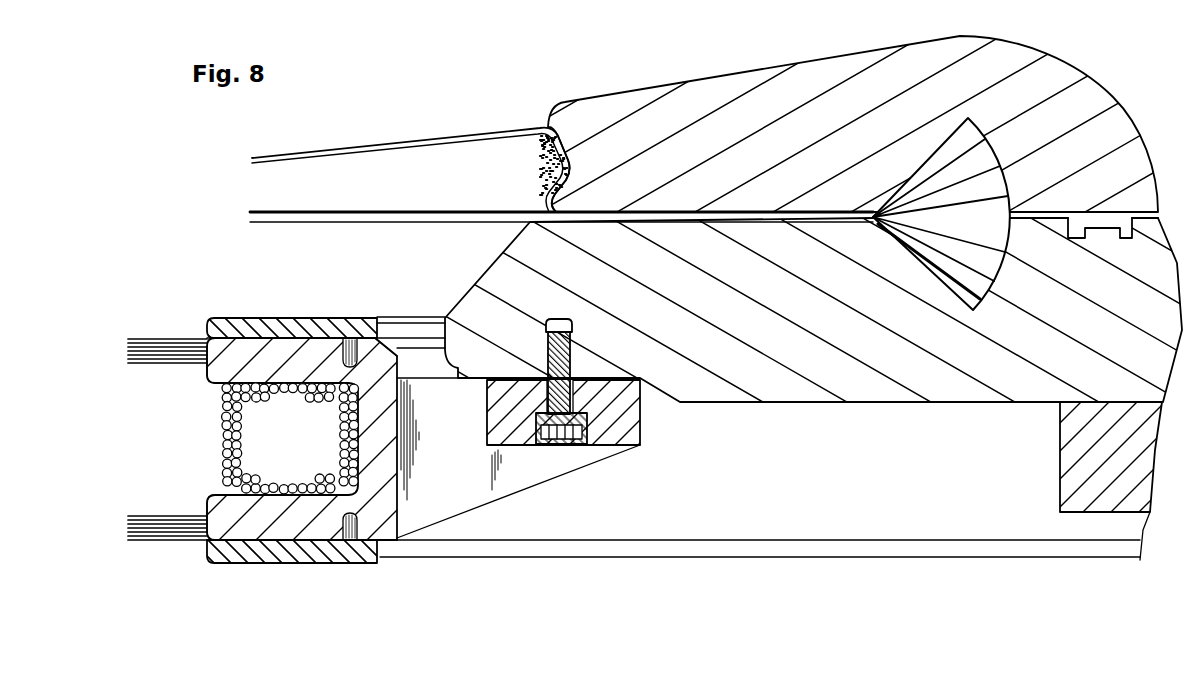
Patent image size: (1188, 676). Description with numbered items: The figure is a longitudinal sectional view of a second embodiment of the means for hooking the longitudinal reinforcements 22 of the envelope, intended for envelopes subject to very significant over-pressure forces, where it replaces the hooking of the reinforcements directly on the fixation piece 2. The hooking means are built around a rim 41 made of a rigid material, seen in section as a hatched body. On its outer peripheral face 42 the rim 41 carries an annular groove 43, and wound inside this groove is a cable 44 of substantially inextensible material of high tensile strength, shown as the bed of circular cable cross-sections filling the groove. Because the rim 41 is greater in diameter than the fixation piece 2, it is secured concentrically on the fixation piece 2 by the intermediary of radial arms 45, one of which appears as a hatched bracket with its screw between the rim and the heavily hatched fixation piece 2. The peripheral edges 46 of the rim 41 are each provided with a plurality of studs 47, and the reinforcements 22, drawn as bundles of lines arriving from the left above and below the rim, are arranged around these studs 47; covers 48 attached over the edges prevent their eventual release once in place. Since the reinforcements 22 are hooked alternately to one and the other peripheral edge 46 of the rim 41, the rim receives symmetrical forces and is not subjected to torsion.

The fixation piece 2 is at (878, 378).
The longitudinal reinforcements 22 is at (168, 350).
The rim 41 is at (218, 540).
The outer peripheral face 42 is at (210, 376).
The annular groove 43 is at (396, 428).
The cable 44 is at (288, 402).
The radial arms 45 is at (542, 457).
The peripheral edges 46 is at (238, 320).
The studs 47 is at (307, 348).
The covers 48 is at (318, 557).